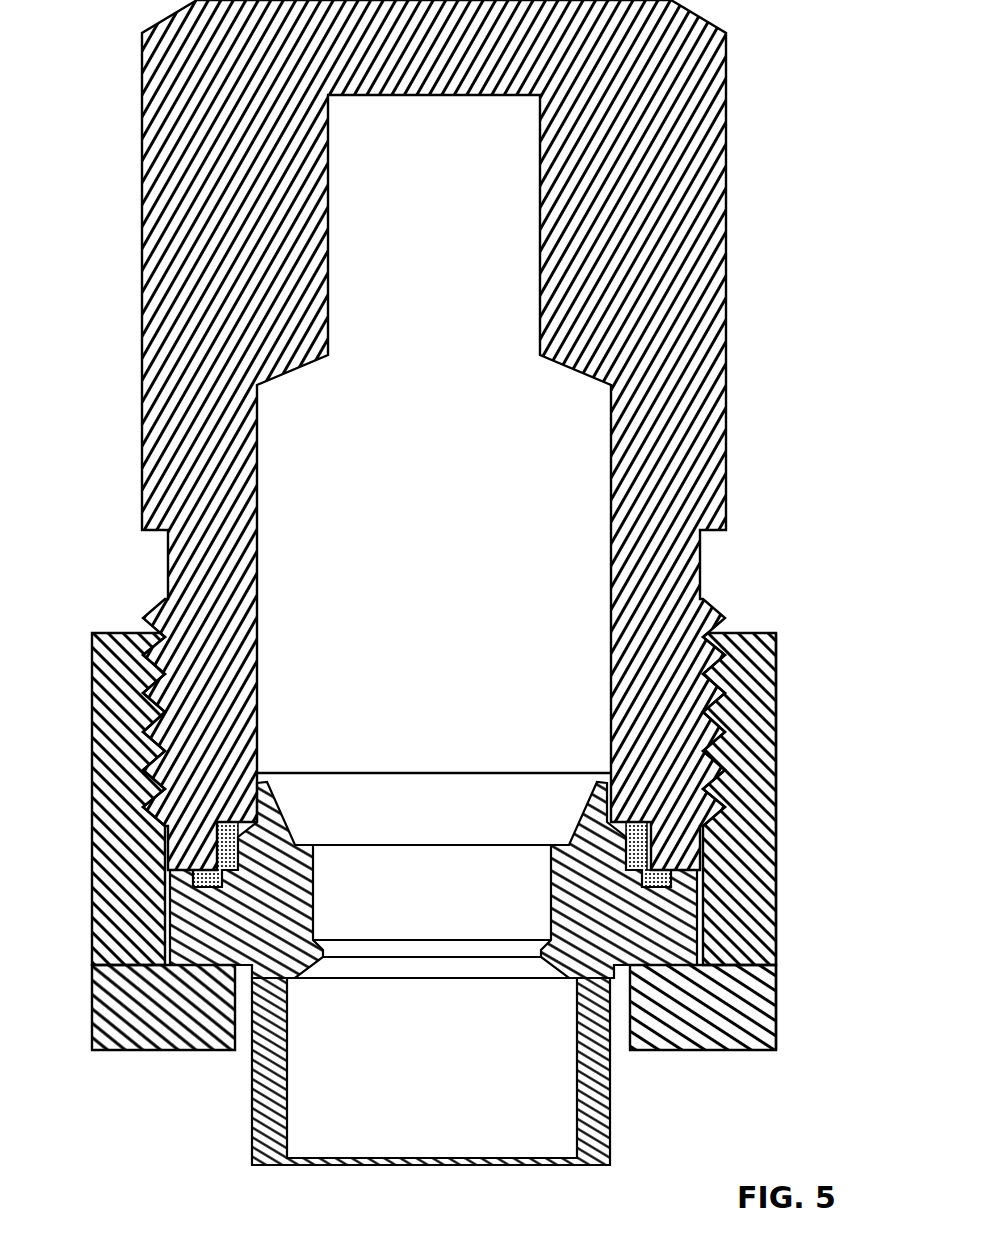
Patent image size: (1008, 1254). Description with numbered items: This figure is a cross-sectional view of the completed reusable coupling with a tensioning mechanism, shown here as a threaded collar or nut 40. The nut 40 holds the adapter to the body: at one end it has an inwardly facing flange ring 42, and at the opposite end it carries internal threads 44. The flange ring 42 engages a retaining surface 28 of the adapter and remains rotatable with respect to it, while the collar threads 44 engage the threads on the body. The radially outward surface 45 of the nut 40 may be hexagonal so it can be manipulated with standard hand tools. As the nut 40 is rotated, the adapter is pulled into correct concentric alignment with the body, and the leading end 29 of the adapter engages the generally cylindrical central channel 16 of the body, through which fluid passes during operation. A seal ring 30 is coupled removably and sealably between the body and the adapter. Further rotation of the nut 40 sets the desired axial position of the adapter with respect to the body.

The central channel 16 is at (449, 603).
The retaining surface 28 is at (623, 975).
The leading end 29 is at (255, 773).
The seal ring 30 is at (688, 883).
The nut 40 is at (745, 632).
The flange ring 42 is at (679, 1043).
The internal threads 44 is at (703, 838).
The radially outward surface 45 is at (779, 886).